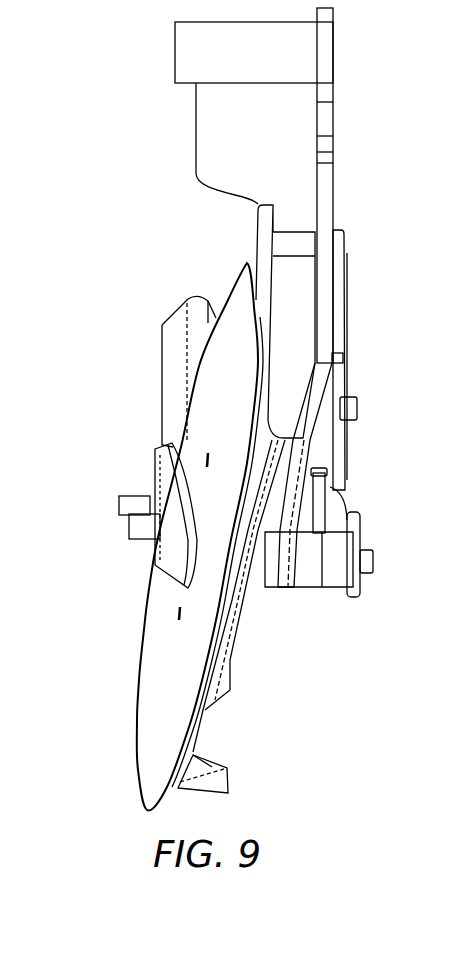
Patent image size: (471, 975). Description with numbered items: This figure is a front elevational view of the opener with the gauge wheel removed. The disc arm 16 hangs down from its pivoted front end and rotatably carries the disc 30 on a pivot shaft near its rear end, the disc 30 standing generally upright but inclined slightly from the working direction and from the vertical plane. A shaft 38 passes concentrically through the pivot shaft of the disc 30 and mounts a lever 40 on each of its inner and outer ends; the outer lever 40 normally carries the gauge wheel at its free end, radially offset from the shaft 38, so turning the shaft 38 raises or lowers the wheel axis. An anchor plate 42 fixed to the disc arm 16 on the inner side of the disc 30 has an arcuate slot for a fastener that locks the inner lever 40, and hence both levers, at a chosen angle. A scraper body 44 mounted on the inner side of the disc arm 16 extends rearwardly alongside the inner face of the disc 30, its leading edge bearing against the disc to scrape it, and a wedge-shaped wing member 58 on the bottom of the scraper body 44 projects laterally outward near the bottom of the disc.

The disc arm 16 is at (288, 272).
The disc 30 is at (163, 648).
The shaft 38 is at (130, 527).
The lever 40 is at (157, 480).
The anchor plate 42 is at (325, 508).
The scraper body 44 is at (222, 628).
The wing member 58 is at (205, 765).